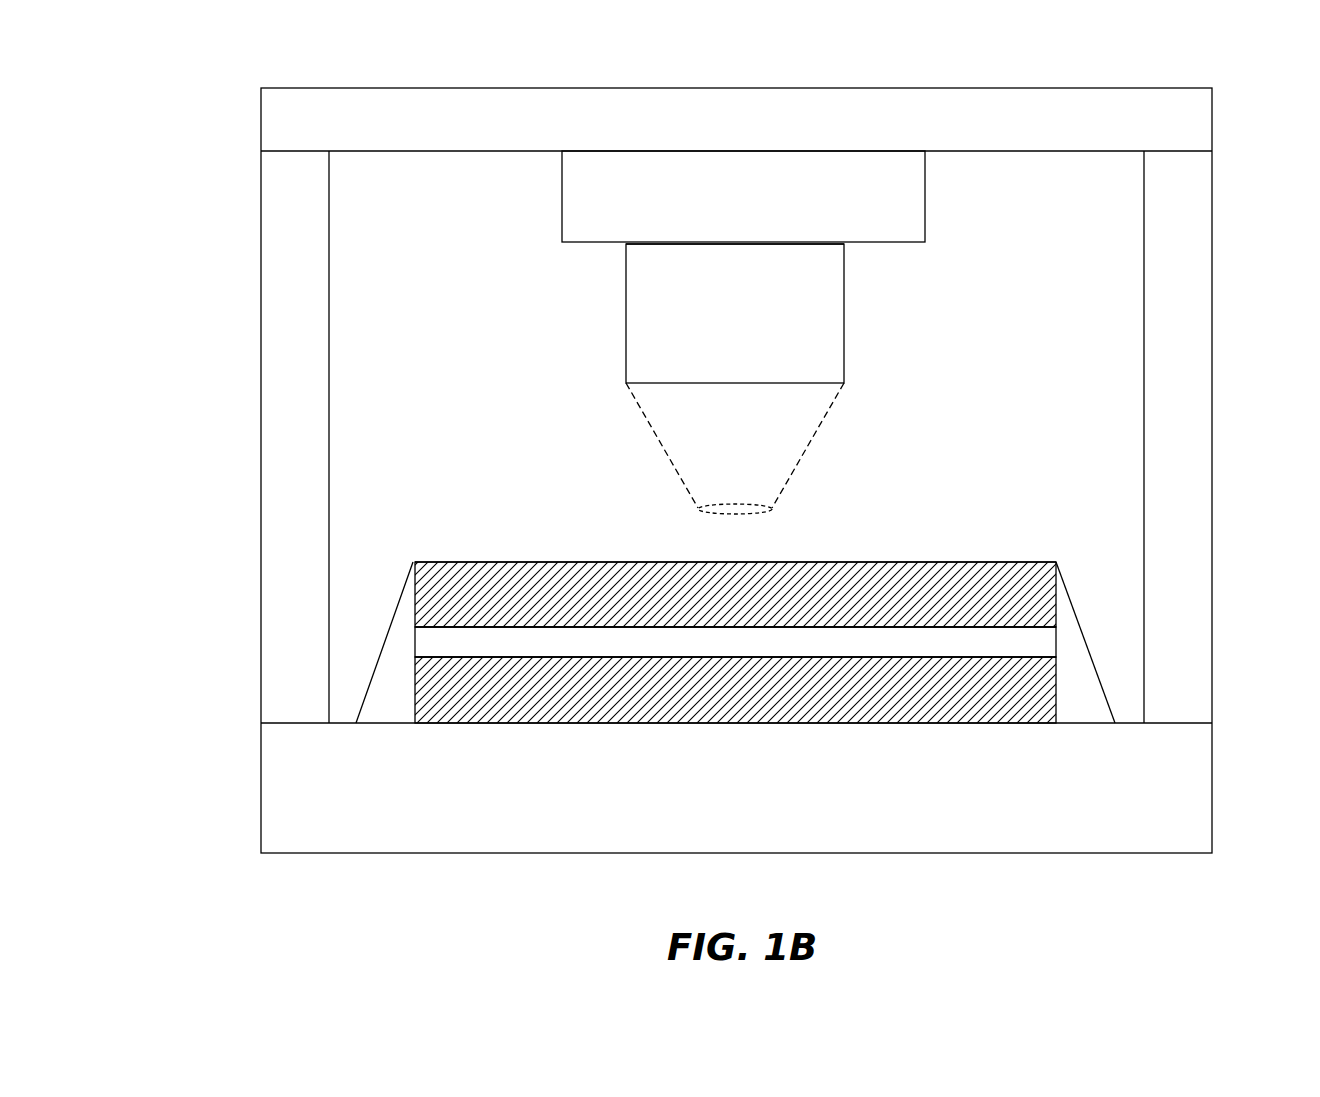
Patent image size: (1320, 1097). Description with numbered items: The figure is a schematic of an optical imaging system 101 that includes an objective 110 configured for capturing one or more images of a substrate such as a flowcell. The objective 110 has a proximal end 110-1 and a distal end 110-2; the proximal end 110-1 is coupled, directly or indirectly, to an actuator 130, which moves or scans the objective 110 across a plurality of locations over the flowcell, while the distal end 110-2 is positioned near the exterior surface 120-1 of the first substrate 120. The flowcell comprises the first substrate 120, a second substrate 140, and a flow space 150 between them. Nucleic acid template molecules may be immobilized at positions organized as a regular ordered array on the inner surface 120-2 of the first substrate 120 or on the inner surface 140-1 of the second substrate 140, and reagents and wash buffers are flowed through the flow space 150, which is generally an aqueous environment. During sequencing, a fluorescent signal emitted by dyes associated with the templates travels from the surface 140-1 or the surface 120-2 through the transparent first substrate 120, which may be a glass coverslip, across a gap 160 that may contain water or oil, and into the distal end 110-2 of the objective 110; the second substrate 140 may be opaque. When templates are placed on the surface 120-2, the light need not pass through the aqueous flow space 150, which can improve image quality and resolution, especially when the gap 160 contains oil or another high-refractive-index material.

The optical imaging system 101 is at (237, 77).
The actuator 130 is at (925, 200).
The objective 110 is at (844, 373).
The proximal end 110-1 is at (818, 244).
The distal end 110-2 is at (772, 510).
The gap 160 is at (735, 466).
The first substrate 120 is at (1056, 580).
The exterior surface 120-1 is at (975, 562).
The inner surface of first substrate 120-2 is at (463, 628).
The flow space 150 is at (735, 642).
The second substrate 140 is at (1056, 700).
The inner surface of second substrate 140-1 is at (1035, 657).